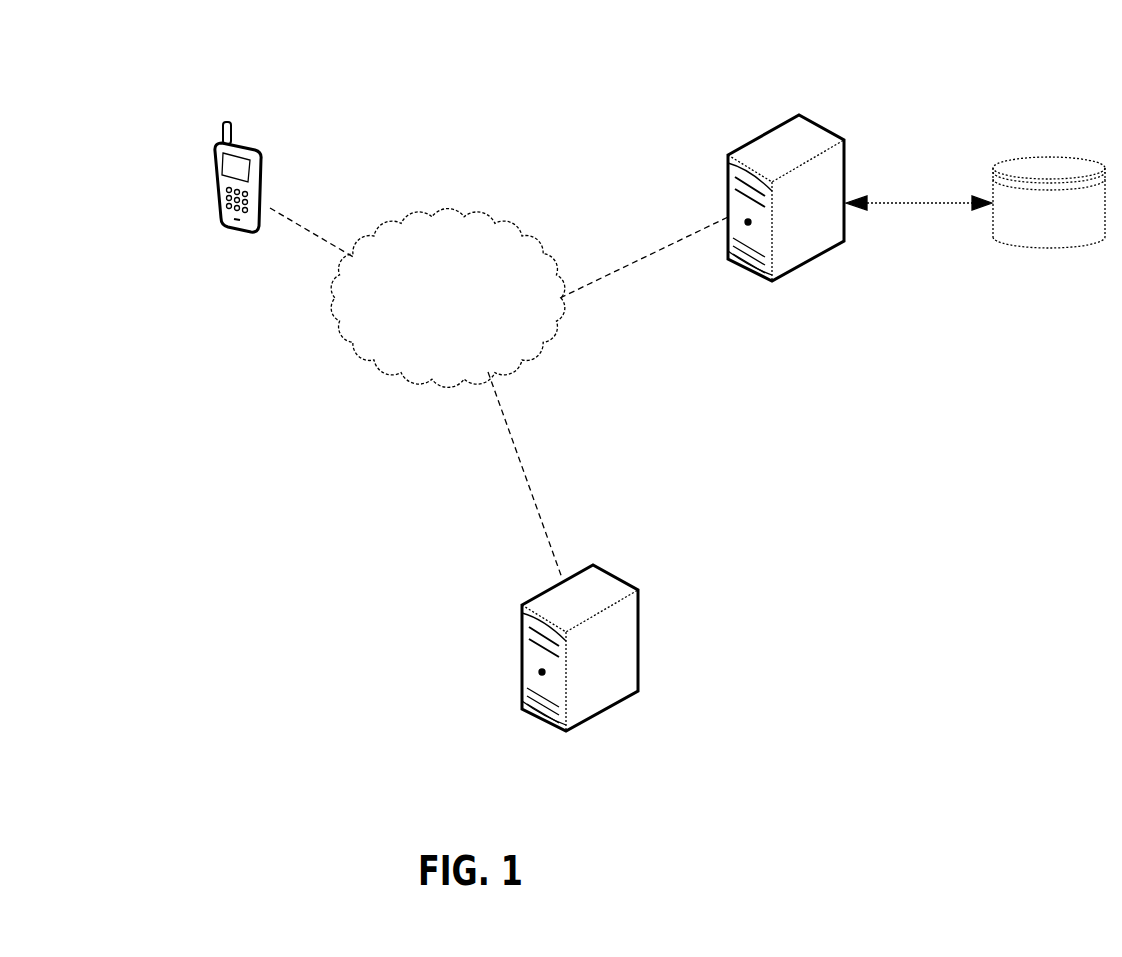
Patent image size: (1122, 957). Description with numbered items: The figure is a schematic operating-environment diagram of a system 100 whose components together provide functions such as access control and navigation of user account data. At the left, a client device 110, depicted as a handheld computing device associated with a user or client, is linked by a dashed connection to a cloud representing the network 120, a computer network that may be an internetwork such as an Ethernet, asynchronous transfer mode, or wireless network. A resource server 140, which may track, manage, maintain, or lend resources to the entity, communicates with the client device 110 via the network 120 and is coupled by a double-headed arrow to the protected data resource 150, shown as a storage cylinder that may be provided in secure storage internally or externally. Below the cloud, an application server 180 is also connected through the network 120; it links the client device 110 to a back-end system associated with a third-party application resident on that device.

The system 100 is at (105, 56).
The client device 110 is at (237, 233).
The network 120 is at (468, 323).
The resource server 140 is at (840, 124).
The protected data resource 150 is at (1065, 167).
The application server 180 is at (637, 587).